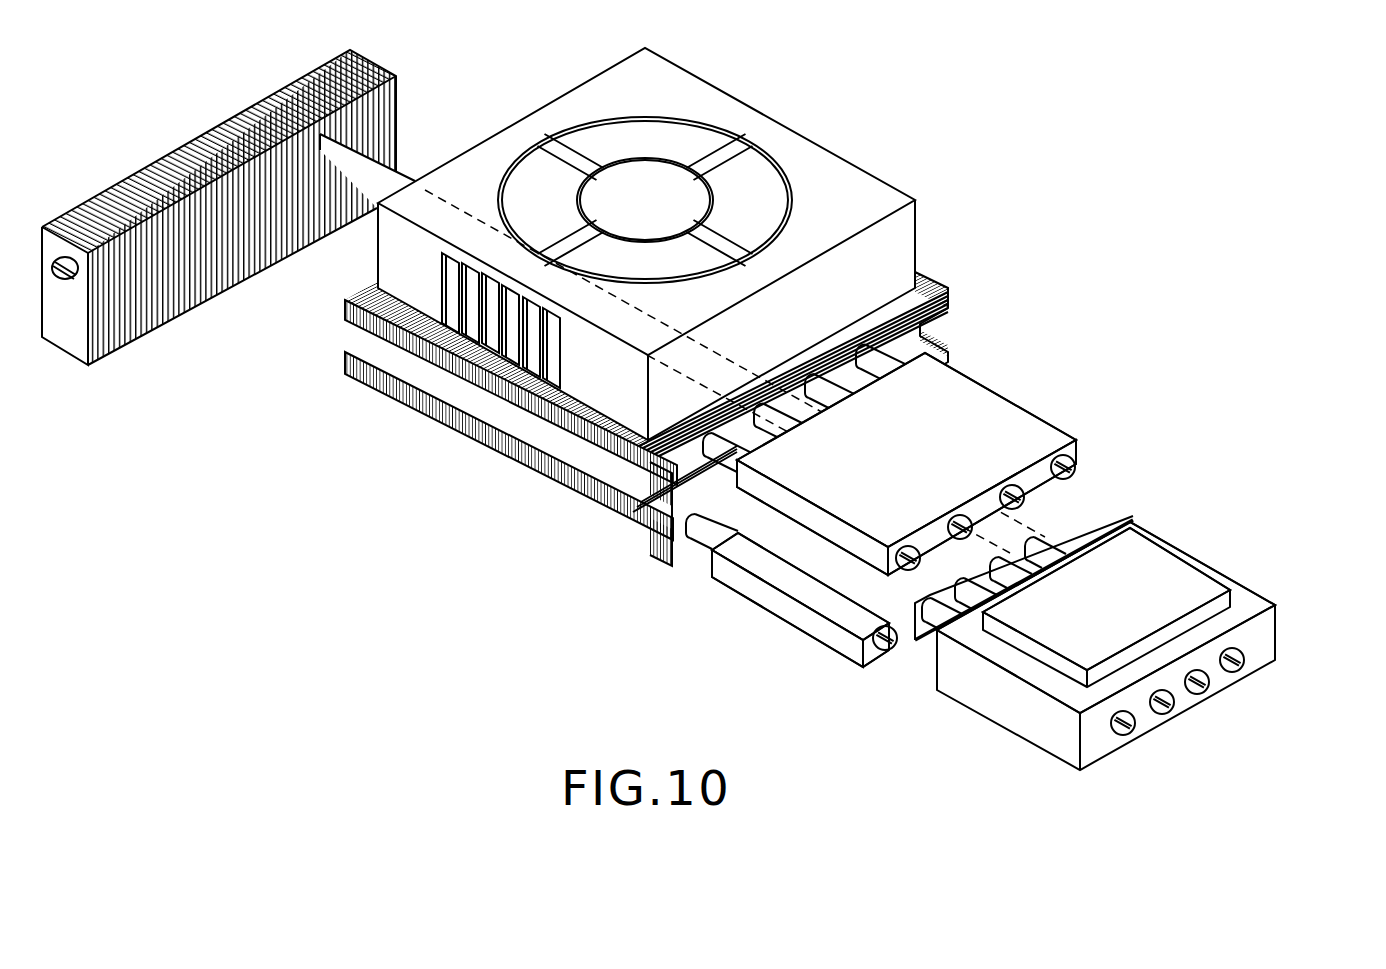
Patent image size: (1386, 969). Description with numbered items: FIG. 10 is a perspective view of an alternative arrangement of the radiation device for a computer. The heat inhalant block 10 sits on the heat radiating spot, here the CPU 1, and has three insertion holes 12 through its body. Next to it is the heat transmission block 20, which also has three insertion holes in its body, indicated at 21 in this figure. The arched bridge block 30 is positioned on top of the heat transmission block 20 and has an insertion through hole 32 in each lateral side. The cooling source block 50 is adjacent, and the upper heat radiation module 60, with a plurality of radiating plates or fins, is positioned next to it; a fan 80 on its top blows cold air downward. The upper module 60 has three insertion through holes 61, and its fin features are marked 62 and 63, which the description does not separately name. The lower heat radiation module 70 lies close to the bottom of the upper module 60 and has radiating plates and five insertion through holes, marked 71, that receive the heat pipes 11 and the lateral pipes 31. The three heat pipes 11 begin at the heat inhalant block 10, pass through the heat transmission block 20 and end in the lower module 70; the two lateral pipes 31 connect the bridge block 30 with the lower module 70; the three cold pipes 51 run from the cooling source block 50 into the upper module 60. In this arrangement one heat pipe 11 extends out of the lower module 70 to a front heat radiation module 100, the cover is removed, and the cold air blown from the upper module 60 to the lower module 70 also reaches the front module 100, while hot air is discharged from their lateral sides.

The CPU 1 is at (1143, 608).
The heat inhalant block 10 is at (1245, 602).
The heat pipes 11 is at (938, 620).
The insertion holes 12 is at (1173, 707).
The heat transmission block 20 is at (1023, 552).
The heat pipes 21 is at (938, 620).
The bridge block 30 is at (788, 613).
The lateral pipes 31 is at (888, 668).
The insertion through hole 32 is at (878, 644).
The cooling source block 50 is at (1050, 427).
The cold pipes 51 is at (887, 365).
The upper heat radiation module 60 is at (935, 282).
The insertion through holes 61 is at (617, 527).
The upper fins 62 is at (500, 463).
The slot 63 is at (938, 325).
The lower heat radiation module 70 is at (643, 542).
The heat pipe 71 is at (693, 505).
The fan 80 is at (810, 165).
The front heat radiation module 100 is at (60, 322).